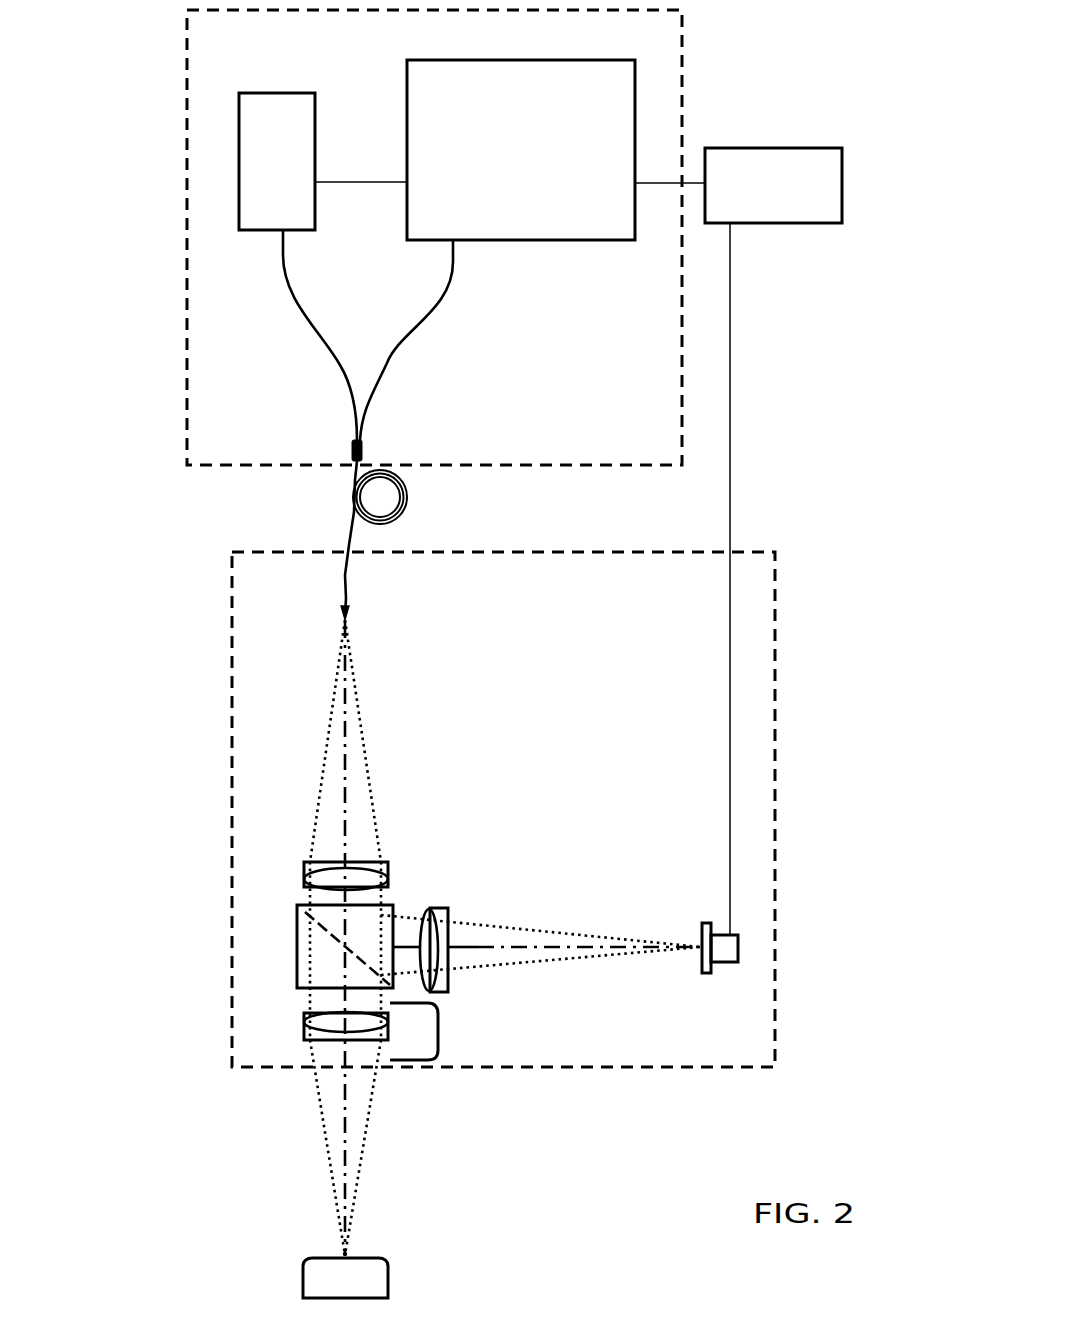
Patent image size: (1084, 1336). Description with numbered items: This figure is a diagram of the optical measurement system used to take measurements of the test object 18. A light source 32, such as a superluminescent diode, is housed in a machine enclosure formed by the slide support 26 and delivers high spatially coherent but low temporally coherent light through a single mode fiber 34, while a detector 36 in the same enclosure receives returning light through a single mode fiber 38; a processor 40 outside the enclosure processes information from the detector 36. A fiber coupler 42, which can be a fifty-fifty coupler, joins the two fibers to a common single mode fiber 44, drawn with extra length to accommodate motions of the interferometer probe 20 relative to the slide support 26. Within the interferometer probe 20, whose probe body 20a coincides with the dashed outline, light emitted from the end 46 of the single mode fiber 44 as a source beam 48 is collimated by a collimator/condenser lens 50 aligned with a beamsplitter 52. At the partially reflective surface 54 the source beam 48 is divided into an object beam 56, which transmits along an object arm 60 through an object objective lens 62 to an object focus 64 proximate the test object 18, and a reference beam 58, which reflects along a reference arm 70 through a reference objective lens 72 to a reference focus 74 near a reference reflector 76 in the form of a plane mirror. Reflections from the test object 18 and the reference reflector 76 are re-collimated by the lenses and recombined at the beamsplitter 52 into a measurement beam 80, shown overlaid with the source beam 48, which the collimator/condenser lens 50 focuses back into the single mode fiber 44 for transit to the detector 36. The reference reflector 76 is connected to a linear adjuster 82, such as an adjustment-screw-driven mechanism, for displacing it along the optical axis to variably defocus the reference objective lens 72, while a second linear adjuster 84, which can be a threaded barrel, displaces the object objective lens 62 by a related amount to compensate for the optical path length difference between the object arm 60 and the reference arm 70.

The test object 18 is at (398, 1270).
The interferometer probe 20 is at (419, 809).
The probe body 20a is at (232, 740).
The slide support 26 is at (186, 213).
The light source 32 is at (284, 167).
The single mode fiber 34 is at (290, 290).
The detector 36 is at (523, 153).
The single mode fiber 38 is at (435, 307).
The processor 40 is at (785, 198).
The fiber coupler 42 is at (352, 450).
The single mode fiber 44 is at (346, 566).
The end 46 is at (342, 612).
The source beam 48 is at (420, 938).
The collimator/condenser lens 50 is at (305, 862).
The beamsplitter 52 is at (297, 950).
The partially reflective surface 54 is at (345, 962).
The object beam 56 is at (306, 1005).
The reference beam 58 is at (410, 912).
The object arm 60 is at (301, 1115).
The object objective lens 62 is at (305, 1036).
The object focus 64 is at (344, 1256).
The reference arm 70 is at (532, 908).
The reference objective lens 72 is at (443, 906).
The reference focus 74 is at (692, 950).
The reference reflector 76 is at (701, 936).
The measurement beam 80 is at (360, 752).
The linear adjuster 82 is at (739, 948).
The second linear adjuster 84 is at (440, 1032).